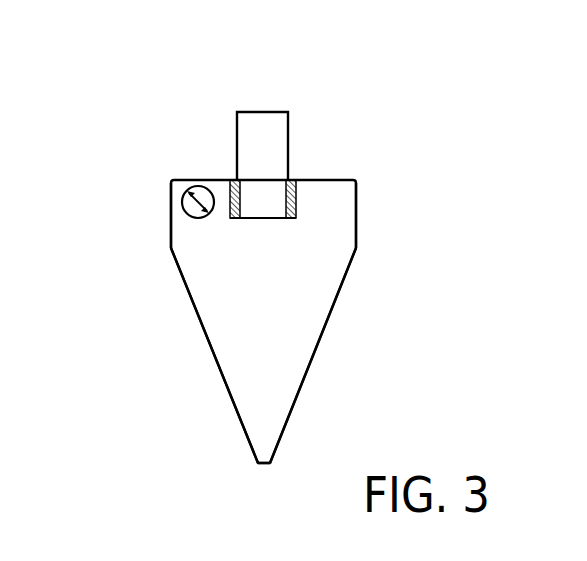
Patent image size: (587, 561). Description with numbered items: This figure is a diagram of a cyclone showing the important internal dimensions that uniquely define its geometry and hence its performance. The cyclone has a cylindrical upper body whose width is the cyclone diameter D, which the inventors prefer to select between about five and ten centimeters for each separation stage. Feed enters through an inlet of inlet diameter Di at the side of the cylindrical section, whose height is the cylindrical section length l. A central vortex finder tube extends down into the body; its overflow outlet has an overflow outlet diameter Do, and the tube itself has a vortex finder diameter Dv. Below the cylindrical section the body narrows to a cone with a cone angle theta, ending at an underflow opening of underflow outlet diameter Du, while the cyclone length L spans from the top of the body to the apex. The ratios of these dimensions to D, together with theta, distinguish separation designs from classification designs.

The cyclone diameter D is at (356, 180).
The overflow outlet diameter Do is at (195, 88).
The vortex finder diameter Dv is at (185, 233).
The underflow outlet diameter Du is at (303, 482).
The inlet diameter Di is at (207, 188).
The cylindrical section length l is at (127, 147).
The cyclone length L is at (258, 463).
The cone angle theta is at (305, 370).